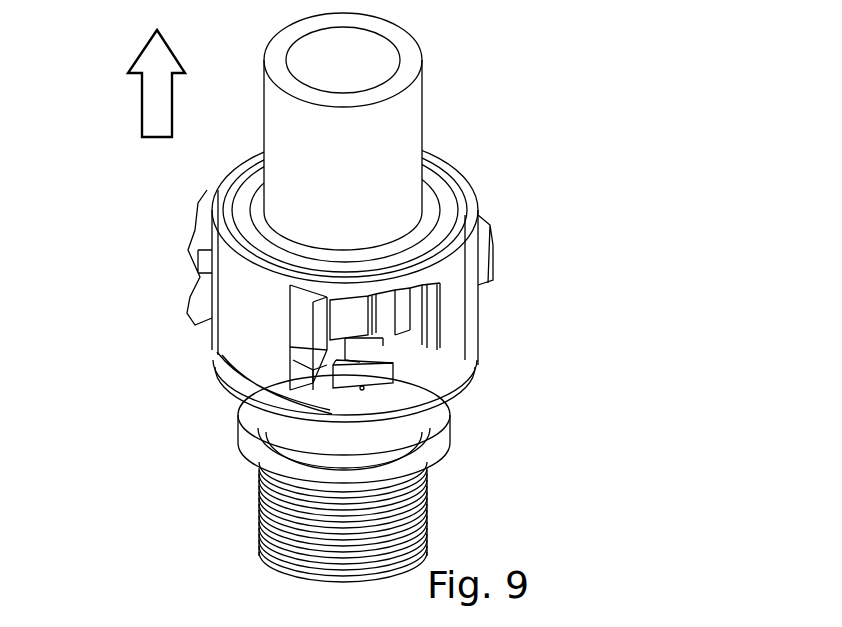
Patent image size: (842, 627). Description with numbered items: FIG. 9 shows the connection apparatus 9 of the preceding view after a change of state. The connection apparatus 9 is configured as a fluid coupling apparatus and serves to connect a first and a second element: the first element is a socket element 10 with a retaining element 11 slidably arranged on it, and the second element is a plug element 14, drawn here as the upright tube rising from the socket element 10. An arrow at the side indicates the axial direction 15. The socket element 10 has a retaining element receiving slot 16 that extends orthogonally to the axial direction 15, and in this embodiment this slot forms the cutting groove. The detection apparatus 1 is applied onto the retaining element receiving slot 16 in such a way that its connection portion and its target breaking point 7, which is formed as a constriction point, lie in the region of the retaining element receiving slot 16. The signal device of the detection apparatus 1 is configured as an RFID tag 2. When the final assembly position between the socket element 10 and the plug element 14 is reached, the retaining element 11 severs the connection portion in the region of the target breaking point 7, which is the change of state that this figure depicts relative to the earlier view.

The detection apparatus 1 is at (338, 303).
The RFID tag 2 is at (340, 328).
The target breaking point 7 is at (343, 357).
The connection apparatus 9 is at (620, 160).
The socket element 10 is at (447, 365).
The retaining element 11 is at (418, 318).
The plug element 14 is at (395, 135).
The axial direction 15 is at (142, 100).
The retaining element receiving slot 16 is at (385, 332).